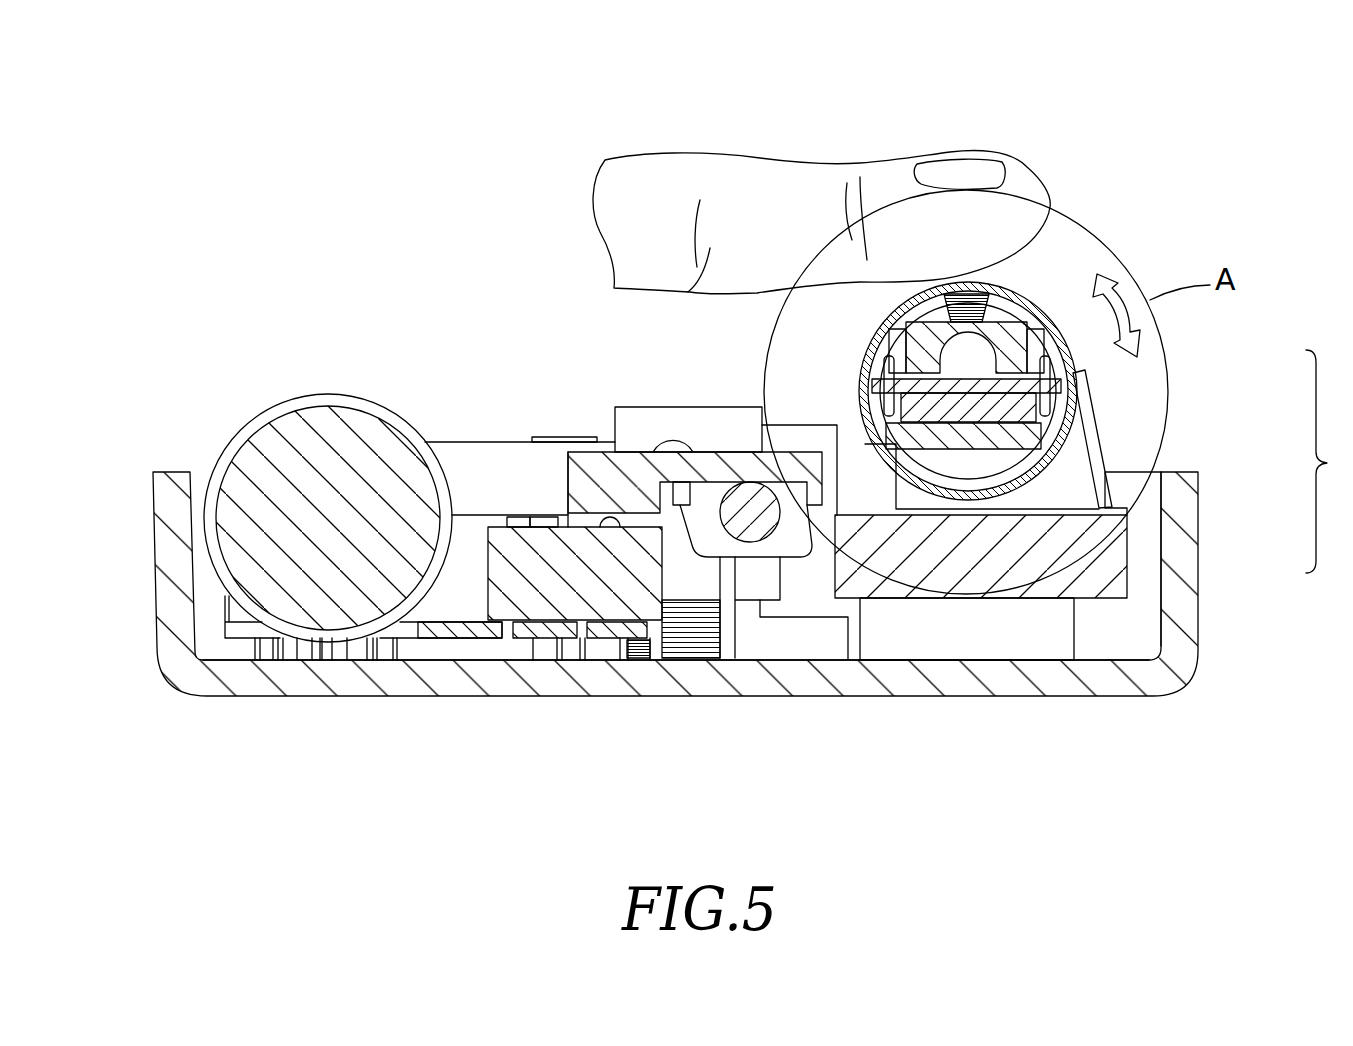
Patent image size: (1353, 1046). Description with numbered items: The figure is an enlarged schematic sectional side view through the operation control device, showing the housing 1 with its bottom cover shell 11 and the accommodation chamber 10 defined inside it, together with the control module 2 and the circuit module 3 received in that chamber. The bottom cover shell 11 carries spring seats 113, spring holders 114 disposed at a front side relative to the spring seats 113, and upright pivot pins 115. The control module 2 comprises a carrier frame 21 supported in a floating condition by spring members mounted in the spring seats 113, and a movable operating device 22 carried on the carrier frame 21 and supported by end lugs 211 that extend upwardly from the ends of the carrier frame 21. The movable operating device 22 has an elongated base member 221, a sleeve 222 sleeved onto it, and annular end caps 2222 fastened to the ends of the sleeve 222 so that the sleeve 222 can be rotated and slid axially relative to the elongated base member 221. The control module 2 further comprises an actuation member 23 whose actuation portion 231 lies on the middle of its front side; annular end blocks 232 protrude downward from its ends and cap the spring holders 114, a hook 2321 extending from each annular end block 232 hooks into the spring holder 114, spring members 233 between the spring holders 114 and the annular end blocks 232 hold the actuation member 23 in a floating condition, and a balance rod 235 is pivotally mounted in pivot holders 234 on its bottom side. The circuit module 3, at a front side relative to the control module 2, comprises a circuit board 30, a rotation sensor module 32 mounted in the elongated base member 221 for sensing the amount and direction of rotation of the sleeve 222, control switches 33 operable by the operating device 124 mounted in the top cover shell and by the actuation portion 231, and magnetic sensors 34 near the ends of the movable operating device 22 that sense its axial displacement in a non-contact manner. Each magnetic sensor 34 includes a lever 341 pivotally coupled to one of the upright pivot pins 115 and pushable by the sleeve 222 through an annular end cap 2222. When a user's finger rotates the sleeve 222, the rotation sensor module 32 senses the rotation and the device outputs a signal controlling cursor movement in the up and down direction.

The housing 1 is at (207, 710).
The accommodation chamber 10 is at (1116, 650).
The bottom cover shell 11 is at (252, 680).
The spring seats 113 is at (973, 637).
The spring holders 114 is at (738, 645).
The upright pivot pins 115 is at (565, 435).
The operating device 124 is at (322, 580).
The control module 2 is at (1117, 461).
The carrier frame 21 is at (1113, 560).
The end lugs 211 is at (1107, 487).
The movable operating device 22 is at (1080, 372).
The elongated base member 221 is at (1013, 411).
The sleeve 222 is at (1027, 297).
The annular end caps 2222 is at (1034, 458).
The actuation member 23 is at (693, 436).
The actuation portion 231 is at (627, 500).
The annular end blocks 232 is at (681, 782).
The hook 2321 is at (692, 583).
The spring members 233 is at (640, 655).
The pivot holders 234 is at (797, 543).
The balance rod 235 is at (753, 513).
The circuit module 3 is at (471, 780).
The circuit board 30 is at (462, 630).
The rotation sensor module 32 is at (970, 342).
The control switches 33 is at (550, 595).
The magnetic sensors 34 is at (462, 330).
The lever 341 is at (473, 468).